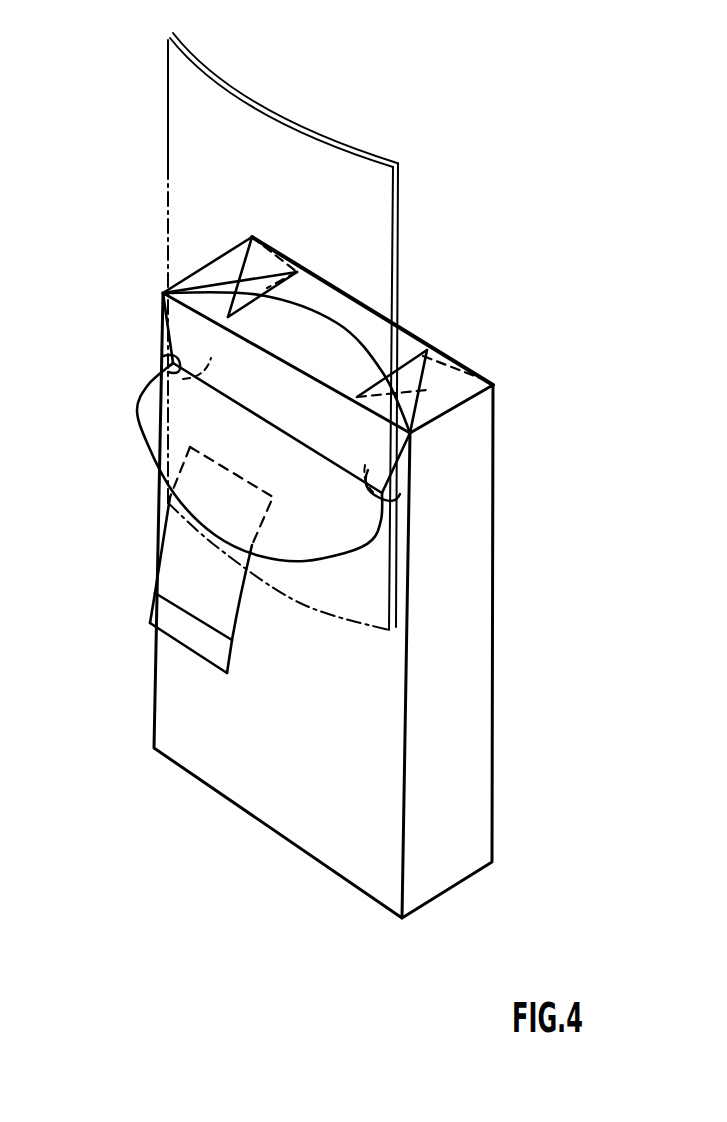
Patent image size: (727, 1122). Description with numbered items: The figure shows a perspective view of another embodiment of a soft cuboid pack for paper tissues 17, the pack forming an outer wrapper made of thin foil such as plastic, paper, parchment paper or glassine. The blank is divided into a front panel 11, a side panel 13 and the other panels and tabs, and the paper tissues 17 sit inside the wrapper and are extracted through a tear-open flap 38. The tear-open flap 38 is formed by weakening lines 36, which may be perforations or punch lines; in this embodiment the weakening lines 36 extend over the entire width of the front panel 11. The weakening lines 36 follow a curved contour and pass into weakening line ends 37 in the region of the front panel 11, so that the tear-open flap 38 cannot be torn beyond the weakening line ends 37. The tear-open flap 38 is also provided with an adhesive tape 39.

The front panel 11 is at (278, 738).
The side panel 13 is at (431, 740).
The paper tissues 17 is at (242, 138).
The weakening lines 36 is at (358, 327).
The weakening line ends 37 is at (157, 350).
The tear-open flap 38 is at (198, 425).
The adhesive tape 39 is at (190, 578).